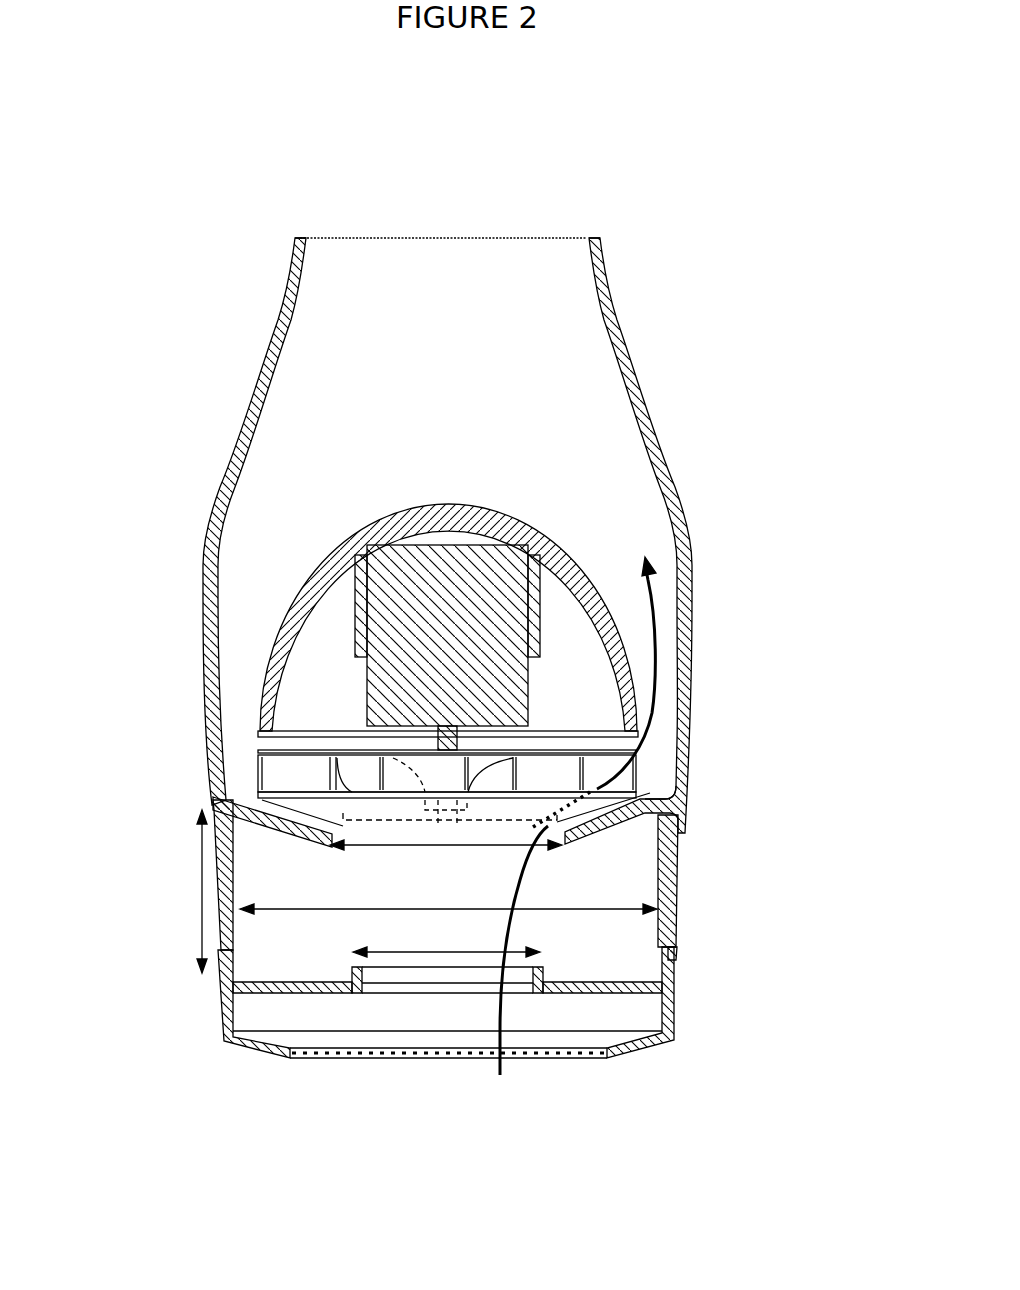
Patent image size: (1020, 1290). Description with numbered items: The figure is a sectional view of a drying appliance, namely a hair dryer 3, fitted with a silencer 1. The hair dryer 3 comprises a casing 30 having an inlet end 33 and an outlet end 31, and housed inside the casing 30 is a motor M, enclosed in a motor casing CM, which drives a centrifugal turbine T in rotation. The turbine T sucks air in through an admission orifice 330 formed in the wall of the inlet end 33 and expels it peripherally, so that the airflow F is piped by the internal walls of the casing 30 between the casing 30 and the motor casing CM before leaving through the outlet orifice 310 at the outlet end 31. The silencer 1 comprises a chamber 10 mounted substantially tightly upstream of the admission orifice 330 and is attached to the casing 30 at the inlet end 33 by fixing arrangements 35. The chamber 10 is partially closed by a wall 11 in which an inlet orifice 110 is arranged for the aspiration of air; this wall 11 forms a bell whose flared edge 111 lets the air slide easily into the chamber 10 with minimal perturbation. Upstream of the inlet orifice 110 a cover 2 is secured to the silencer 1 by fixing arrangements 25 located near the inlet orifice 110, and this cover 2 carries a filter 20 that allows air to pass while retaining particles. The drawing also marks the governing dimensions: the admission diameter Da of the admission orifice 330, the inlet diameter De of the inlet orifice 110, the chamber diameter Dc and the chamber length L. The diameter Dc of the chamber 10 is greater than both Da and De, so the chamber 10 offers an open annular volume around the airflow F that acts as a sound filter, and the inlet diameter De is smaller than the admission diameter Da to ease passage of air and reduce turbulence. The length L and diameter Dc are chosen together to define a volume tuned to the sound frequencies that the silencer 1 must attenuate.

The silencer 1 is at (687, 893).
The cover 2 is at (640, 1052).
The hair dryer 3 is at (650, 368).
The chamber 10 is at (627, 843).
The wall 11 is at (600, 990).
The filter 20 is at (467, 1057).
The fixing arrangements 25 is at (672, 958).
The casing 30 is at (688, 548).
The outlet end 31 is at (600, 253).
The inlet end 33 is at (637, 818).
The fixing arrangements 35 is at (680, 792).
The inlet orifice 110 is at (420, 977).
The flared edge 111 is at (358, 975).
The outlet orifice 310 is at (435, 250).
The admission orifice 330 is at (363, 838).
The motor M is at (475, 555).
The motor casing CM is at (540, 585).
The turbine T is at (300, 775).
The airflow F is at (655, 625).
The length L is at (194, 891).
The admission diameter Da is at (446, 860).
The chamber diameter Dc is at (448, 897).
The inlet diameter De is at (446, 941).